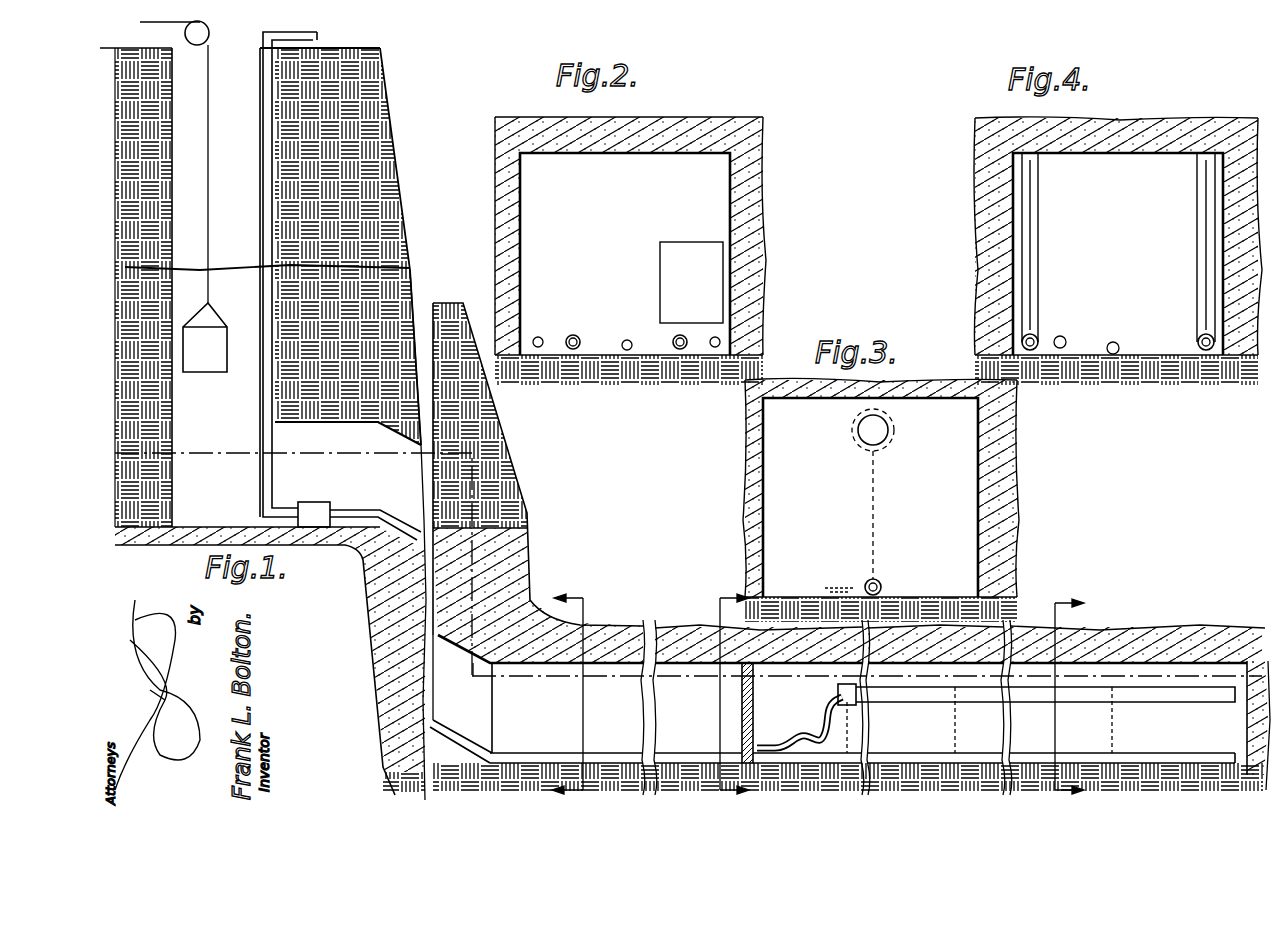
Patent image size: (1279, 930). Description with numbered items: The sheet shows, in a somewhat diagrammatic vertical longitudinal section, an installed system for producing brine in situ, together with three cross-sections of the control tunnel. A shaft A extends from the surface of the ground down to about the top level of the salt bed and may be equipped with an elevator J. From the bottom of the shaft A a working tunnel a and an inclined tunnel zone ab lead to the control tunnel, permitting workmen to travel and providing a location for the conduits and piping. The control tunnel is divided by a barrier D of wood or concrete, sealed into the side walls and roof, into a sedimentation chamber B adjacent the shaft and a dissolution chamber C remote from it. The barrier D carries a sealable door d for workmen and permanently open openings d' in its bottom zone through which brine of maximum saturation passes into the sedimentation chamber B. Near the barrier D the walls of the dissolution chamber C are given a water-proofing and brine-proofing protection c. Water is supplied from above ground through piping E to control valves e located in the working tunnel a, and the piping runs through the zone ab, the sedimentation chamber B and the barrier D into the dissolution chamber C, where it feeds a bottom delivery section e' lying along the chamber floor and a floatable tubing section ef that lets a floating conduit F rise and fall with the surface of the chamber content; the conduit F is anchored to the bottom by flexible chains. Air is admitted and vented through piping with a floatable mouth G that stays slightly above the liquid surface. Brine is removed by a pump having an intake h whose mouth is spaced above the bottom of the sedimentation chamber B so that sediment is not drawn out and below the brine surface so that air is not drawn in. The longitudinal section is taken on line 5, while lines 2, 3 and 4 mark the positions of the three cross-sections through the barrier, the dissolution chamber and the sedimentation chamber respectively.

In FIG. 1, the shaft A is at (223, 174).
In FIG. 1, the piping E is at (262, 308).
In FIG. 4, the piping E is at (1118, 340).
In FIG. 1, the elevator J is at (227, 352).
In FIG. 1, the working tunnel a is at (495, 483).
In FIG. 1, the control valve e is at (317, 501).
In FIG. 1, the section line 5— 5 is at (115, 450).
In FIG. 1, the inclined tunnel zone ab is at (478, 708).
In FIG. 1, the sedimentation chamber B is at (505, 692).
In FIG. 4, the sedimentation chamber B is at (1118, 251).
In FIG. 1, the barrier D is at (740, 714).
In FIG. 2, the barrier D is at (630, 251).
In FIG. 1, the protection c is at (790, 703).
In FIG. 1, the floatable tubing section ef is at (792, 727).
In FIG. 1, the air duct F' is at (1045, 683).
In FIG. 1, the dissolution chamber C is at (919, 731).
In FIG. 3, the dissolution chamber C is at (881, 500).
In FIG. 1, the delivery section e' is at (1178, 747).
In FIG. 2, the delivery section e' is at (613, 327).
In FIG. 3, the delivery section e' is at (875, 584).
In FIG. 1, the section line 4— 4 is at (579, 703).
In FIG. 1, the section line 2— 2 is at (730, 703).
In FIG. 1, the section line 3— 3 is at (1085, 706).
In FIG. 2, the sealable door d is at (691, 282).
In FIG. 2, the openings d' is at (626, 325).
In FIG. 3, the floating conduit F is at (893, 430).
In FIG. 4, the intake h is at (1037, 326).
In FIG. 4, the floatable mouth G is at (1203, 320).